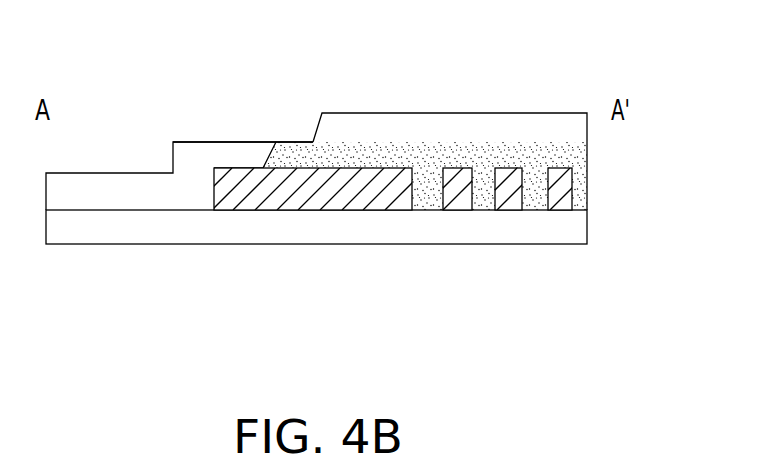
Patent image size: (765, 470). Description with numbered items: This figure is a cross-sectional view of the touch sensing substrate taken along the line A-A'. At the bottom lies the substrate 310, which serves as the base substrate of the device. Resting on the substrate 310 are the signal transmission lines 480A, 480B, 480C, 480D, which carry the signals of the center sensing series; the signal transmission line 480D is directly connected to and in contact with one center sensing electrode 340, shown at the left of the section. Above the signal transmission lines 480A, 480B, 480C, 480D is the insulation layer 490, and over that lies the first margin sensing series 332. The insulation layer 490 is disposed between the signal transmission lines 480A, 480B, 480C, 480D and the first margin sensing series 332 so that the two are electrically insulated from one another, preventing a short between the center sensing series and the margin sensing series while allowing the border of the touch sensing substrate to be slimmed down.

The substrate 310 is at (568, 225).
The first margin sensing series 332 is at (448, 125).
The center sensing electrode 340 is at (101, 190).
The insulation layer 490 is at (572, 155).
The signal transmission line 480A is at (563, 197).
The signal transmission line 480B is at (510, 193).
The signal transmission line 480C is at (457, 195).
The signal transmission line 480D is at (323, 190).